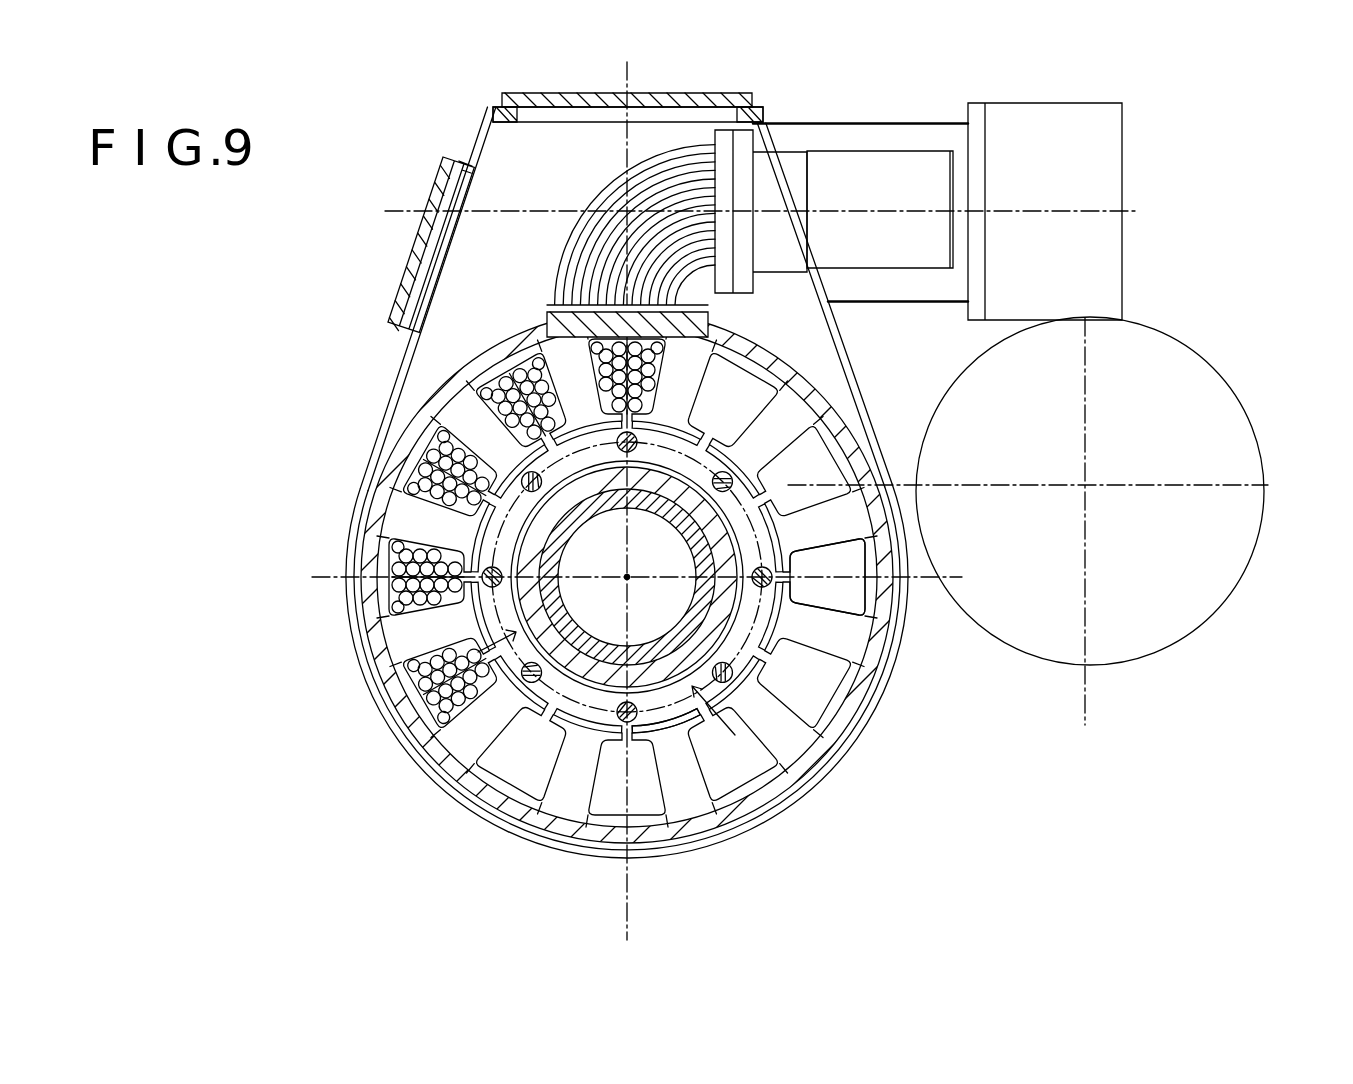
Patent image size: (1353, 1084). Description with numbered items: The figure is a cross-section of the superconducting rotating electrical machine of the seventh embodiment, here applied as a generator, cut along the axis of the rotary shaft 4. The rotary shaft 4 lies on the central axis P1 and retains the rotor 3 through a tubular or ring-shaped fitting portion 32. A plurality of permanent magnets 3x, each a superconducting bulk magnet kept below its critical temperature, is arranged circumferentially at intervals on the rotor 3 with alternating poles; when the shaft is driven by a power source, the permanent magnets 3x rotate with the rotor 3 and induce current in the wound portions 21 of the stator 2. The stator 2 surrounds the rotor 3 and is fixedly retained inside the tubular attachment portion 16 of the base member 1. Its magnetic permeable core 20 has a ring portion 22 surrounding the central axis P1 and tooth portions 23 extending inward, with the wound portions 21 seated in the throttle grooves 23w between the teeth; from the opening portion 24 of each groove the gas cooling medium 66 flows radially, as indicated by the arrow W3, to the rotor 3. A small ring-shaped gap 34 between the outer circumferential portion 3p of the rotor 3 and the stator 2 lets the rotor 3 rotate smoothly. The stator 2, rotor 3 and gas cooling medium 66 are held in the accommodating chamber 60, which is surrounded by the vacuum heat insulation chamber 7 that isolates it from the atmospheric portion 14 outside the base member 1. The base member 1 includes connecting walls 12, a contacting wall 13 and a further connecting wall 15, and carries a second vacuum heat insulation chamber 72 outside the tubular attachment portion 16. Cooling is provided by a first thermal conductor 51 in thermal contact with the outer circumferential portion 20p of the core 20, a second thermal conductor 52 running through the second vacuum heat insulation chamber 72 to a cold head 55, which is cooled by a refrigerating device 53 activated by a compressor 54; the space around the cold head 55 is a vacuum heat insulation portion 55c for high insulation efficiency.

The base member 1 is at (330, 640).
The stator 2 is at (398, 362).
The rotor 3 is at (425, 532).
The outer circumferential portion of the rotor 3p is at (458, 775).
The permanent magnets 3x is at (720, 470).
The rotary shaft 4 is at (523, 597).
The vacuum heat insulation chamber 7 is at (470, 835).
The connecting walls 12 is at (497, 100).
The contacting wall 13 is at (655, 95).
The atmospheric portion 14 is at (936, 52).
The connecting wall 15 is at (705, 855).
The tubular attachment portion 16 is at (485, 845).
The magnetic permeable core 20 is at (858, 815).
The outer circumferential portion of the magnetic permeable core 20p is at (512, 330).
The wound portions 21 is at (503, 375).
The ring portion 22 is at (820, 800).
The tooth portions 23 is at (468, 410).
The throttle grooves 23w is at (523, 365).
The opening portion 24 is at (772, 492).
The fitting portion 32 is at (500, 640).
The gap 34 is at (835, 445).
The first thermal conductor 51 is at (715, 325).
The second thermal conductor 52 is at (598, 212).
The refrigerating device 53 is at (1010, 102).
The compressor 54 is at (1160, 352).
The cold head 55 is at (800, 190).
The vacuum heat insulation portion 55c is at (935, 130).
The accommodating chamber 60 is at (848, 563).
The gas cooling medium 66 is at (398, 758).
The second vacuum heat insulation chamber 72 is at (510, 168).
The radial flow direction W3 is at (465, 665).
The central axis P1 is at (630, 582).